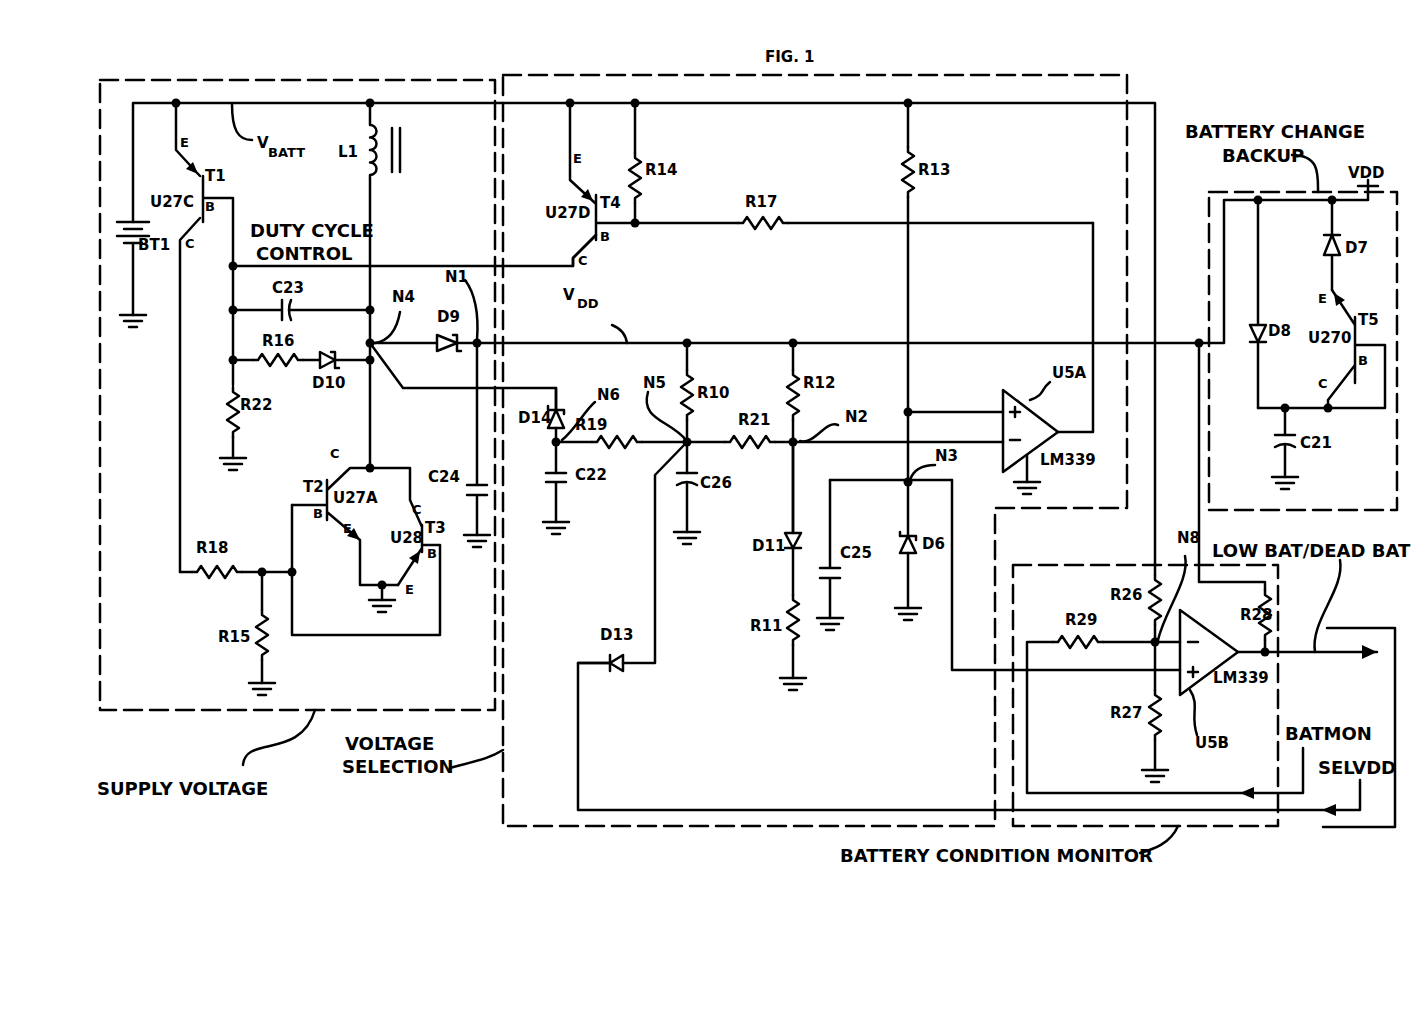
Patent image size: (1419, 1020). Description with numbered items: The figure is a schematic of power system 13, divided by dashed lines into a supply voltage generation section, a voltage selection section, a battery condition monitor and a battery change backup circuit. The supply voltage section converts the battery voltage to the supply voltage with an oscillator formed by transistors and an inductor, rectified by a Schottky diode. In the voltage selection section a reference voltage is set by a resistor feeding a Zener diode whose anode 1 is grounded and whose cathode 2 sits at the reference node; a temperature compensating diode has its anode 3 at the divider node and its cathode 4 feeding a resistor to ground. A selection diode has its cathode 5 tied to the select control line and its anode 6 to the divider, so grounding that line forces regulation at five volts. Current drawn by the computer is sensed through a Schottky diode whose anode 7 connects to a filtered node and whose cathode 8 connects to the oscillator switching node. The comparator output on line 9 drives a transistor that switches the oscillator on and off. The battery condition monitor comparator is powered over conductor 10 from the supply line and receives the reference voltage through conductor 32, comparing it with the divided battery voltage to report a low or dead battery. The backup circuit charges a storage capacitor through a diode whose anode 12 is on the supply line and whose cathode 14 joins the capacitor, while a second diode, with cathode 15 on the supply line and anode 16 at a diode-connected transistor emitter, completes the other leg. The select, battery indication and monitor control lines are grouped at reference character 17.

The anode of Zener diode D6 1 is at (910, 555).
The cathode of Zener diode D6 2 is at (910, 533).
The anode of diode D11 3 is at (795, 530).
The cathode of diode D11 4 is at (791, 552).
The cathode of diode D13 5 is at (606, 672).
The anode of diode D13 6 is at (622, 672).
The anode of Schottky diode D14 7 is at (553, 442).
The cathode of Schottky diode D14 8 is at (564, 408).
The line 9 is at (1045, 223).
The conductor 10 is at (1197, 437).
The anode of diode D8 12 is at (1257, 325).
The power system 13 is at (310, 800).
The cathode terminal of diode D8 14 is at (1252, 348).
The cathode of diode D7 15 is at (1338, 232).
The anode of diode D7 16 is at (1328, 248).
The reference character for control and indication lines 17 is at (1371, 727).
The conductor 32 is at (980, 672).